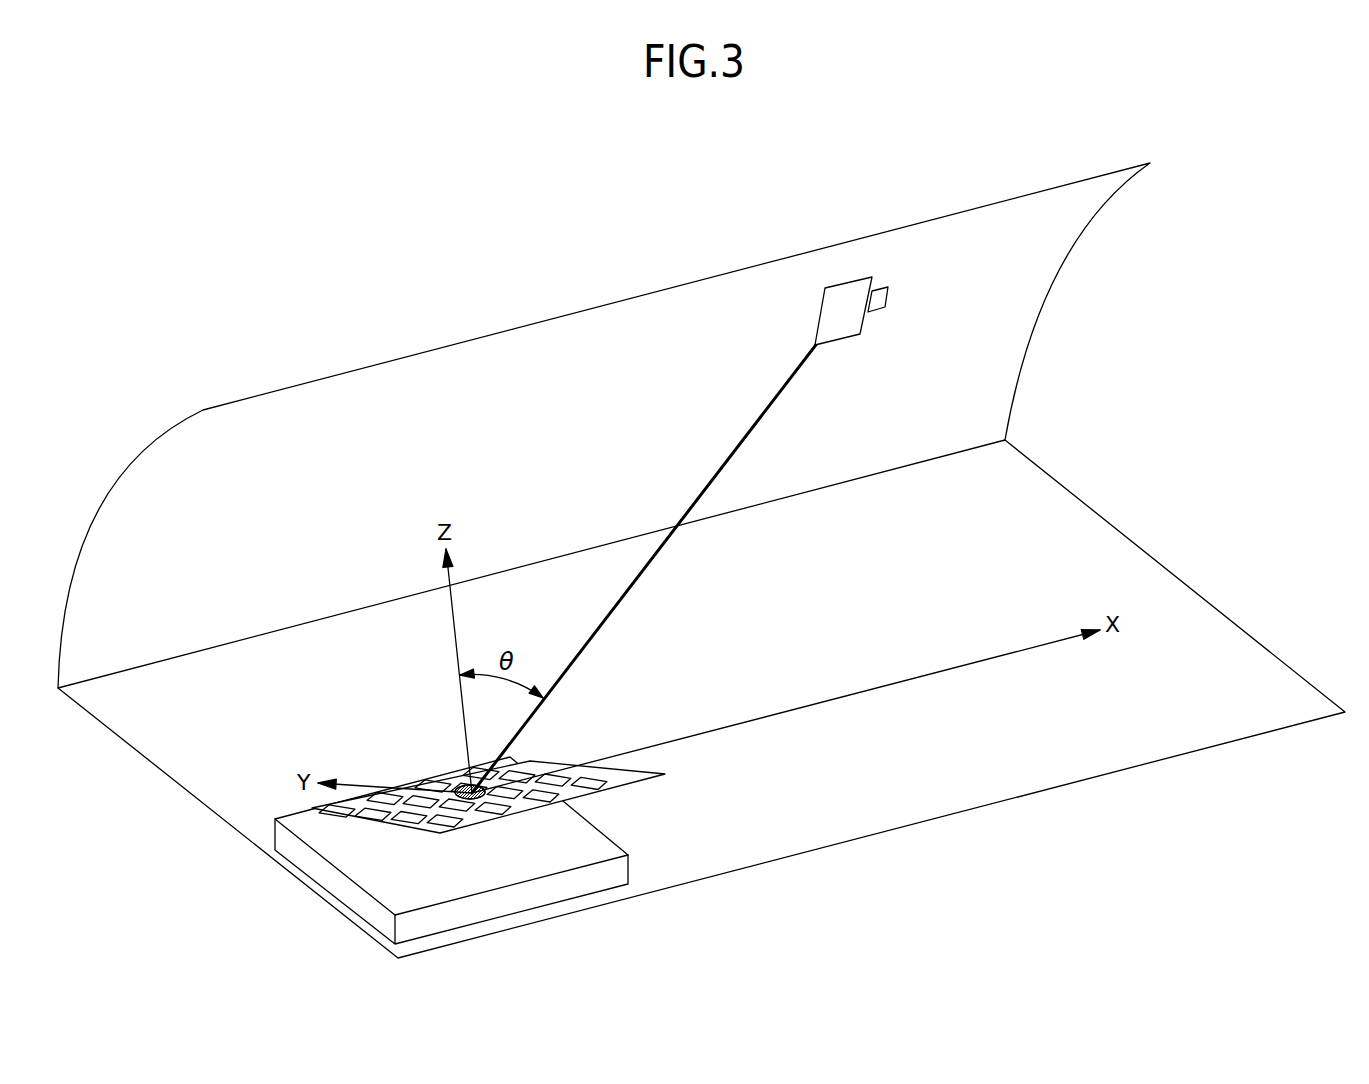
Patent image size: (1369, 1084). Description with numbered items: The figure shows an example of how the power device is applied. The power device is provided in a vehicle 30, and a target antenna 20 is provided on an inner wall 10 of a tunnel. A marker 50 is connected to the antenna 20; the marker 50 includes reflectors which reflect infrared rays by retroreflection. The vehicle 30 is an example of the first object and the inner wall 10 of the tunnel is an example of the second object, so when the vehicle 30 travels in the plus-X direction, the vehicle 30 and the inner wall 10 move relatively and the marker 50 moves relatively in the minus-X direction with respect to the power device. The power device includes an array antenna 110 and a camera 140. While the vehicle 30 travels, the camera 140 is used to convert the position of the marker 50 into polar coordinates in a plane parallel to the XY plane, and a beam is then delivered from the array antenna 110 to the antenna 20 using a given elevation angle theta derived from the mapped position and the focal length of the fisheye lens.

The inner wall 10 is at (990, 318).
The target antenna 20 is at (858, 283).
The vehicle 30 is at (612, 838).
The marker 50 is at (888, 297).
The array antenna 110 is at (312, 808).
The camera 140 is at (458, 792).